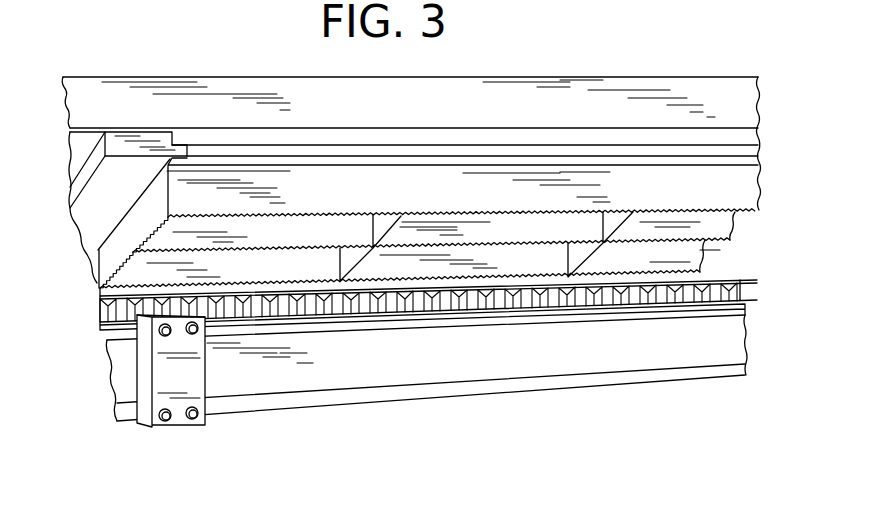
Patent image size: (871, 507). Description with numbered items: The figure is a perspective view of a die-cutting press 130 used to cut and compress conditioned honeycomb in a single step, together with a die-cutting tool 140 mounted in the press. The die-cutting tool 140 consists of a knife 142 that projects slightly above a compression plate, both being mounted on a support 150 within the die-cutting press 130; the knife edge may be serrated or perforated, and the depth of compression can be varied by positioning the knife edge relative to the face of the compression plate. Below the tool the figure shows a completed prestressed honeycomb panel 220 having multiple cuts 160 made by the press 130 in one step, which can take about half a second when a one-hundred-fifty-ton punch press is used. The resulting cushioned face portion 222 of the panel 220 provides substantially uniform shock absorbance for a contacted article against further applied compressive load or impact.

The die-cutting press 130 is at (672, 74).
The die-cutting tool 140 is at (766, 205).
The knife 142 is at (453, 214).
The support 150 is at (97, 216).
The cuts 160 is at (138, 304).
The prestressed honeycomb panel 220 is at (750, 292).
The cushioned face portion 222 is at (708, 283).